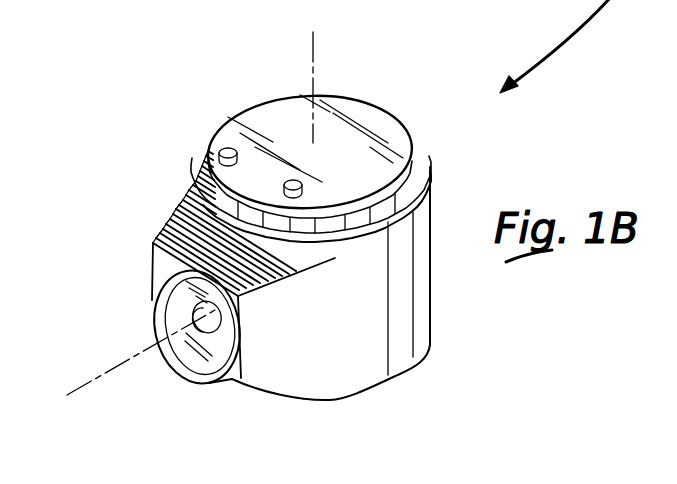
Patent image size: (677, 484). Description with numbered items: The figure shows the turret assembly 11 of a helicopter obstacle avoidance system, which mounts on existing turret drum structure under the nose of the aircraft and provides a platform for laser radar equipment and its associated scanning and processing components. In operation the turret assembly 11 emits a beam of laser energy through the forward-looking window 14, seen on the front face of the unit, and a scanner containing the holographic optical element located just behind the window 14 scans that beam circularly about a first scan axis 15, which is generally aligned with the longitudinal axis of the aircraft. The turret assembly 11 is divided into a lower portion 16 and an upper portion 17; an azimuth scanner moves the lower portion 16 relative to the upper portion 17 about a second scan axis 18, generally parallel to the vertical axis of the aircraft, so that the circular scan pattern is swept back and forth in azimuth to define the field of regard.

The turret assembly 11 is at (224, 116).
The forward-looking window 14 is at (176, 297).
The first scan axis 15 is at (98, 372).
The lower portion 16 is at (406, 379).
The upper portion 17 is at (398, 120).
The second scan axis 18 is at (313, 58).